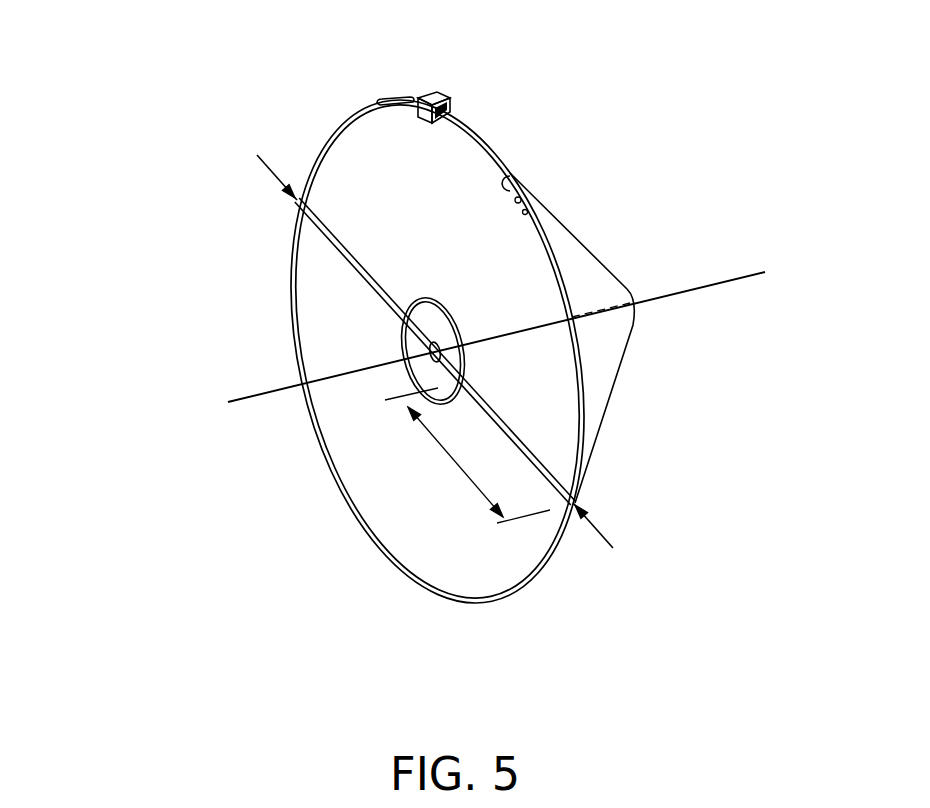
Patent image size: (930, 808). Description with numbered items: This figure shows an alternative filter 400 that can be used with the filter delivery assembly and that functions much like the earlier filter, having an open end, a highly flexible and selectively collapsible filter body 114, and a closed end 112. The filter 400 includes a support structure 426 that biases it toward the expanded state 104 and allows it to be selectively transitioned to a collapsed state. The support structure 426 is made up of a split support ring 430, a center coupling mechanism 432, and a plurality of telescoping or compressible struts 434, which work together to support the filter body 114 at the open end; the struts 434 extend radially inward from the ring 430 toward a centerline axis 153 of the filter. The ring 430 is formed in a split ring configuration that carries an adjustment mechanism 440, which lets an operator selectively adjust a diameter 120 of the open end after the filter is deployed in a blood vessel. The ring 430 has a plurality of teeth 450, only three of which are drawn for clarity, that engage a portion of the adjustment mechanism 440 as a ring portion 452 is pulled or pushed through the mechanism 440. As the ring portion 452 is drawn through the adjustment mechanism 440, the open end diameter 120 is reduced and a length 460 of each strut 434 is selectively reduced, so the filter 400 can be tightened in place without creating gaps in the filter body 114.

The filter 400 is at (168, 118).
The split support ring 430 is at (363, 108).
The center coupling mechanism 432 is at (440, 300).
The diameter 120 is at (266, 165).
The telescoping or compressible struts 434 is at (550, 468).
The centerline axis 153 is at (242, 403).
The expanded state 104 is at (285, 466).
The support structure 426 is at (360, 343).
The closed end 112 is at (637, 281).
The filter body 114 is at (623, 355).
The teeth 450 is at (508, 173).
The adjustment mechanism 440 is at (442, 90).
The ring portion 452 is at (397, 93).
The length 460 is at (452, 460).